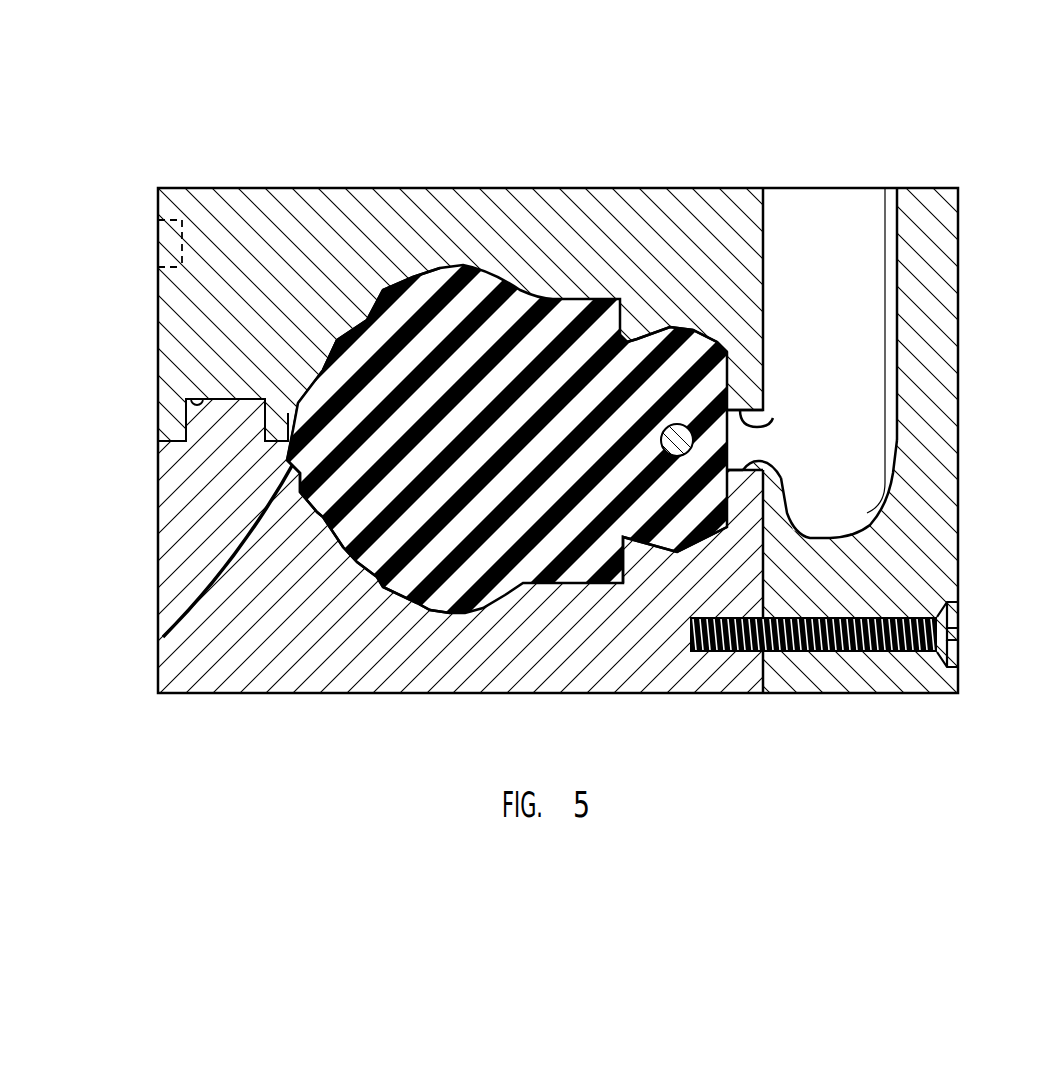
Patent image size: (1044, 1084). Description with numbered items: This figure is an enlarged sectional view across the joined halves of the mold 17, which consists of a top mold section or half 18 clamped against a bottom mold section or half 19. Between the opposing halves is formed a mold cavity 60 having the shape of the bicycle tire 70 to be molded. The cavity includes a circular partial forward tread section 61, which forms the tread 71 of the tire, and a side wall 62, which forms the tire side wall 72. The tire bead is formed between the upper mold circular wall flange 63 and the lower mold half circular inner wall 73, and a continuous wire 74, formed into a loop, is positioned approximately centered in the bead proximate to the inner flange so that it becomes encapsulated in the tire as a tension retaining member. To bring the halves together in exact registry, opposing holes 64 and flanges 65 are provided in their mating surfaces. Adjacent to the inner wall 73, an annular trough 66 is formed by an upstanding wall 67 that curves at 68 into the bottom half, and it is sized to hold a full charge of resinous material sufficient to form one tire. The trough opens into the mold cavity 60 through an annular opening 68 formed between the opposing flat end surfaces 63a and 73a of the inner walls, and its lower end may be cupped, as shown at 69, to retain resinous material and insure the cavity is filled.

The mold 17 is at (151, 289).
The top mold section or half 18 is at (213, 215).
The bottom mold section or half 19 is at (235, 672).
The mold cavity 60 is at (475, 264).
The tread section 61 is at (165, 637).
The side wall 62 is at (408, 277).
The upper mold circular wall flange 63 is at (675, 328).
The flat end surface 63a is at (773, 418).
The holes 64 is at (187, 399).
The flanges 65 is at (197, 427).
The annular trough 66 is at (840, 253).
The upstanding wall 67 is at (937, 257).
The annular opening 68 is at (763, 448).
The cupped lower end 69 is at (857, 530).
The bicycle tire 70 is at (580, 273).
The tread 71 is at (338, 338).
The tire side wall 72 is at (357, 563).
The lower mold half circular inner wall 73 is at (670, 553).
The flat end surface 73a is at (768, 478).
The continuous wire 74 is at (694, 440).